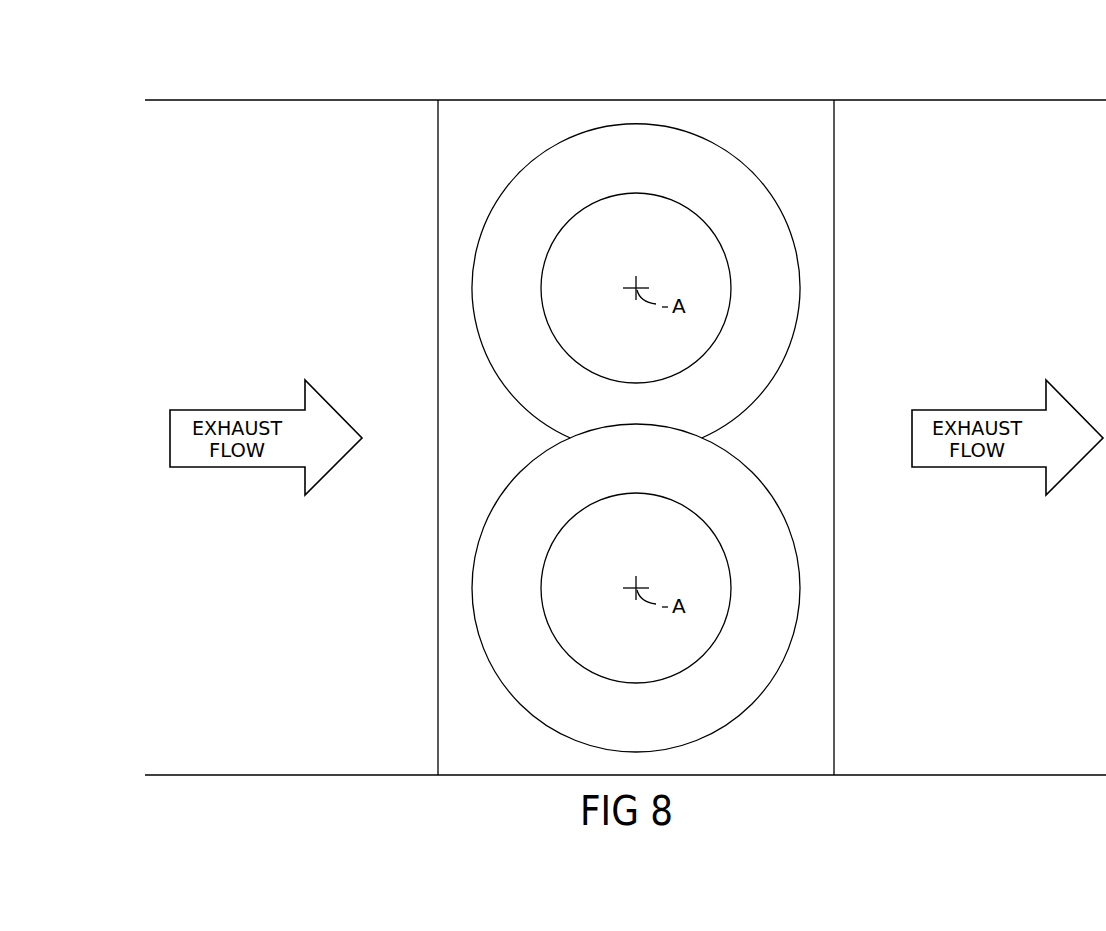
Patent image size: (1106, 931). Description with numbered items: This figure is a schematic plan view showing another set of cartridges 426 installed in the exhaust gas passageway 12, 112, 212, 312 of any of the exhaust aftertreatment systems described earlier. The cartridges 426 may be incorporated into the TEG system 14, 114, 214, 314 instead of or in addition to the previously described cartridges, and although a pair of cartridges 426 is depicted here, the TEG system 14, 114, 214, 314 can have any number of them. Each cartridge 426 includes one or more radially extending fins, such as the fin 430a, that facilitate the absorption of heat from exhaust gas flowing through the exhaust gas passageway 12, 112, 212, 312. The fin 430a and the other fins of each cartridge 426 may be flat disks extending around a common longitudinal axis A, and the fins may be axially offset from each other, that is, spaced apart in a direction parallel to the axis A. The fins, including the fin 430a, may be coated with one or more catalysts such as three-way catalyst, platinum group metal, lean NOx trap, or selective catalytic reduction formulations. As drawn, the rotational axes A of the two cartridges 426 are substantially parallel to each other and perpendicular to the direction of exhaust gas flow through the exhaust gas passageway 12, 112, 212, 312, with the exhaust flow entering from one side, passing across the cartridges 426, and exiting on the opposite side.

The exhaust gas passageway 12 is at (625, 409).
The exhaust gas passageway 112 is at (625, 409).
The exhaust gas passageway 212 is at (625, 409).
The exhaust gas passageway 312 is at (325, 100).
The TEG system 14 is at (690, 402).
The TEG system 114 is at (690, 402).
The TEG system 214 is at (690, 402).
The TEG system 314 is at (792, 90).
The cartridge 426 is at (804, 232).
The radially extending fin 430a is at (490, 263).